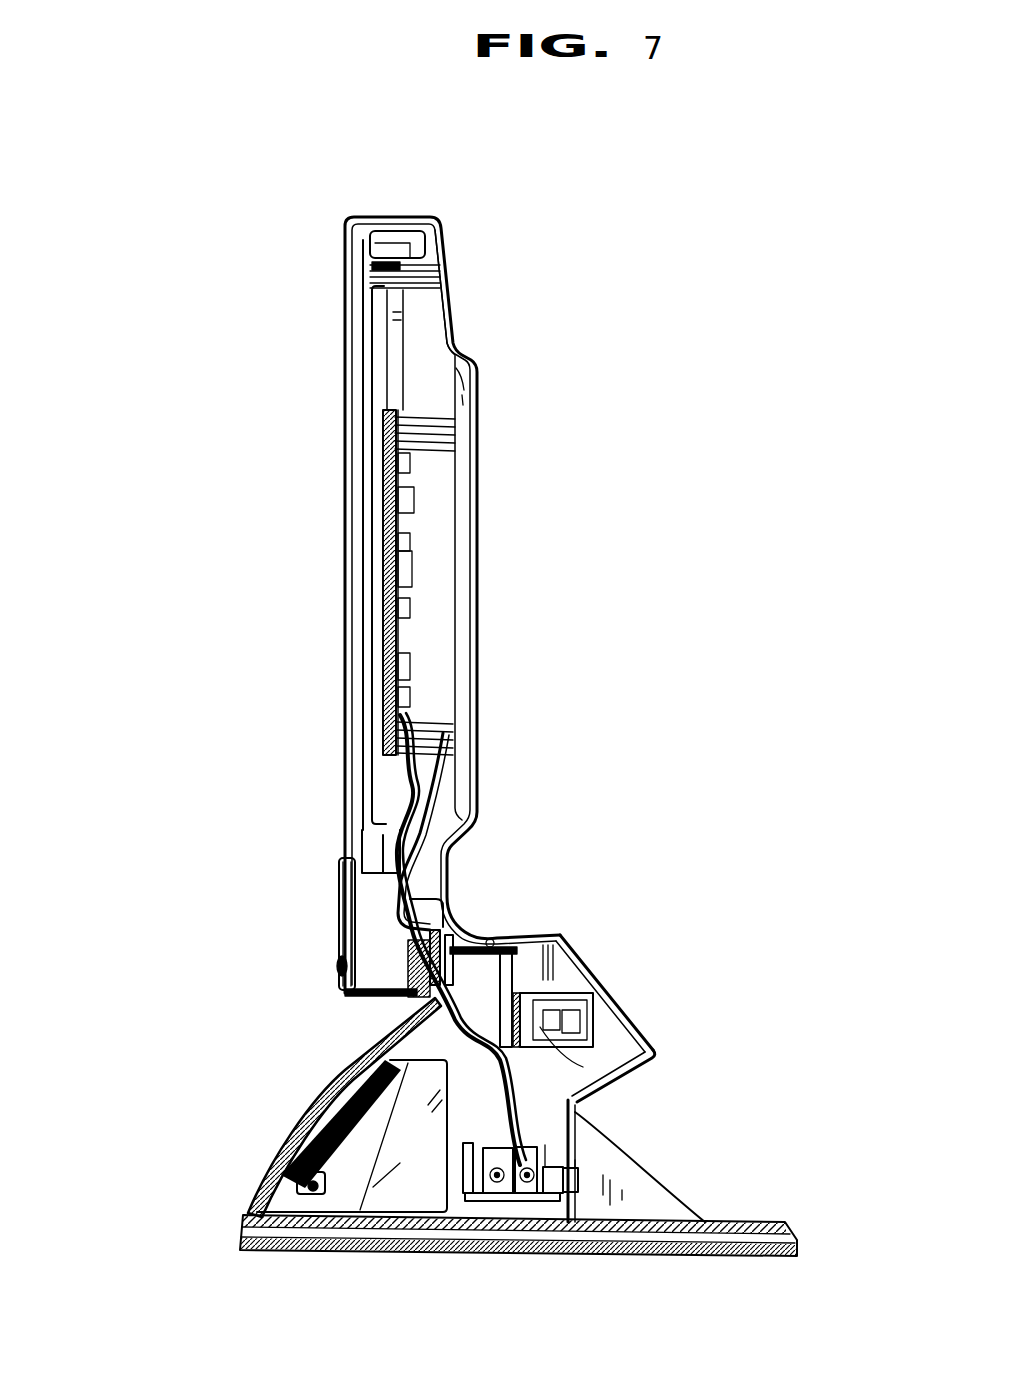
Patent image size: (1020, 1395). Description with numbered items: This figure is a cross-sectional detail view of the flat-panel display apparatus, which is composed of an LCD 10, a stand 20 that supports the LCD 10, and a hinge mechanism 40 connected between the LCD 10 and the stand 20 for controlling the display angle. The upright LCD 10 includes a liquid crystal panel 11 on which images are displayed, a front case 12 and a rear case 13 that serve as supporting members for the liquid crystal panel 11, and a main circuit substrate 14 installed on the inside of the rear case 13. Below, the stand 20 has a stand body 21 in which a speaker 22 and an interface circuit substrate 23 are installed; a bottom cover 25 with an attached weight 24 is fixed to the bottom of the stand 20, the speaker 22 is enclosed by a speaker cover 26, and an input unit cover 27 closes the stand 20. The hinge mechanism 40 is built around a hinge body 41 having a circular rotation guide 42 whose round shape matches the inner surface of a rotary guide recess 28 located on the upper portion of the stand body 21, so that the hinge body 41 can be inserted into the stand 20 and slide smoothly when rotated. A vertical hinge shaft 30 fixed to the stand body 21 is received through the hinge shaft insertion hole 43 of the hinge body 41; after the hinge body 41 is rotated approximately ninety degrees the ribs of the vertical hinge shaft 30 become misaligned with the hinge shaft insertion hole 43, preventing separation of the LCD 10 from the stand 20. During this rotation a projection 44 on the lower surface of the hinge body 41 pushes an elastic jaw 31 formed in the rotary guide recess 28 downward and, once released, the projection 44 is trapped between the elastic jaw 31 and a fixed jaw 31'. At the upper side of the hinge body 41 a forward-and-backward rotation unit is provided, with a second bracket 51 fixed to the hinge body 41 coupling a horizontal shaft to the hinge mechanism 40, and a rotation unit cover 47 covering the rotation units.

The LCD 10 is at (492, 362).
The liquid crystal panel 11 is at (372, 492).
The front case 12 is at (347, 258).
The rear case 13 is at (445, 257).
The main circuit substrate 14 is at (383, 578).
The stand 20 is at (238, 1170).
The stand body 21 is at (650, 1042).
The speaker 22 is at (400, 1190).
The interface circuit substrate 23 is at (525, 1200).
The weight 24 is at (633, 1250).
The bottom cover 25 is at (690, 1255).
The speaker covers 26 is at (287, 1122).
The input unit cover 27 is at (572, 1130).
The rotary guide recess 28 is at (600, 1012).
The vertical hinge shaft 30 is at (547, 975).
The elastic jaw 31 is at (311, 1107).
The fixed jaw 31' is at (669, 1075).
The hinge mechanism 40 is at (600, 961).
The hinge body 41 is at (337, 990).
The circular rotation guide 42 is at (427, 1015).
The hinge shaft insertion hole 43 is at (560, 990).
The projection 44 is at (606, 992).
The rotation unit cover 47 is at (532, 930).
The second bracket 51 is at (489, 932).